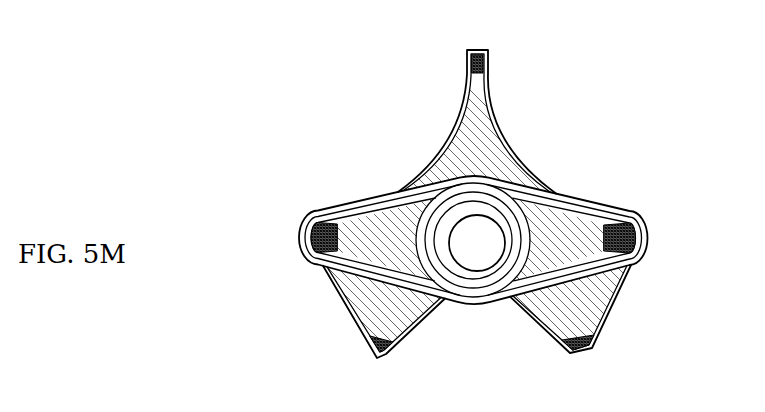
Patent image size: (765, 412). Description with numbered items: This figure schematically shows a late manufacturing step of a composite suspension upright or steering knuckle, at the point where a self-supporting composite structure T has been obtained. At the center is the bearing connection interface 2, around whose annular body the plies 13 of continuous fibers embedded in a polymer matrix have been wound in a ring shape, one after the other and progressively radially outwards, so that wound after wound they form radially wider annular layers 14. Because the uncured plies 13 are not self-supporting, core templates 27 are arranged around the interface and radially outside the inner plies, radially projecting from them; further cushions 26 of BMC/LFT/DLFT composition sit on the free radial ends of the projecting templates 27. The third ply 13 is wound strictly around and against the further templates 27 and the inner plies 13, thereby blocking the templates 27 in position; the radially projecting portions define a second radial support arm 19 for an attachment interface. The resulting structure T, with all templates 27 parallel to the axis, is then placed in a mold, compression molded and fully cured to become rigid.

The bearing connection interface 2 is at (479, 264).
The plies 13 is at (503, 125).
The annular layers 14 is at (612, 210).
The second radial support arm 19 is at (434, 97).
The cushions 26 is at (488, 59).
The core templates 27 is at (458, 150).
The self-supporting composite structure T is at (327, 178).